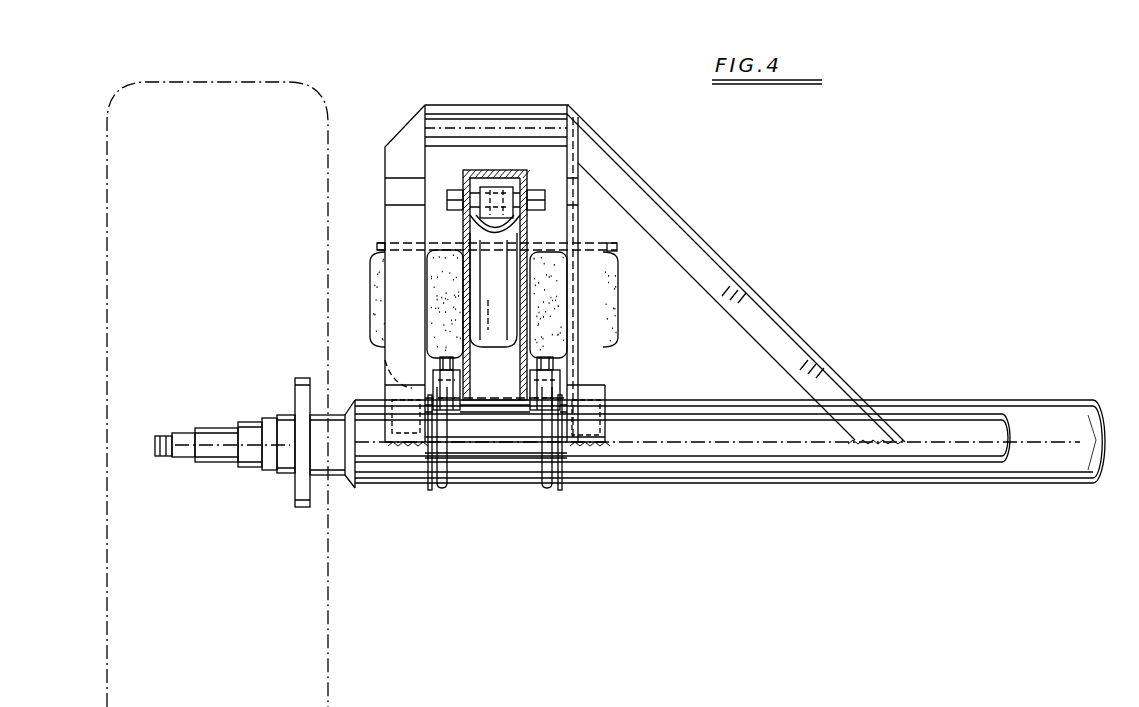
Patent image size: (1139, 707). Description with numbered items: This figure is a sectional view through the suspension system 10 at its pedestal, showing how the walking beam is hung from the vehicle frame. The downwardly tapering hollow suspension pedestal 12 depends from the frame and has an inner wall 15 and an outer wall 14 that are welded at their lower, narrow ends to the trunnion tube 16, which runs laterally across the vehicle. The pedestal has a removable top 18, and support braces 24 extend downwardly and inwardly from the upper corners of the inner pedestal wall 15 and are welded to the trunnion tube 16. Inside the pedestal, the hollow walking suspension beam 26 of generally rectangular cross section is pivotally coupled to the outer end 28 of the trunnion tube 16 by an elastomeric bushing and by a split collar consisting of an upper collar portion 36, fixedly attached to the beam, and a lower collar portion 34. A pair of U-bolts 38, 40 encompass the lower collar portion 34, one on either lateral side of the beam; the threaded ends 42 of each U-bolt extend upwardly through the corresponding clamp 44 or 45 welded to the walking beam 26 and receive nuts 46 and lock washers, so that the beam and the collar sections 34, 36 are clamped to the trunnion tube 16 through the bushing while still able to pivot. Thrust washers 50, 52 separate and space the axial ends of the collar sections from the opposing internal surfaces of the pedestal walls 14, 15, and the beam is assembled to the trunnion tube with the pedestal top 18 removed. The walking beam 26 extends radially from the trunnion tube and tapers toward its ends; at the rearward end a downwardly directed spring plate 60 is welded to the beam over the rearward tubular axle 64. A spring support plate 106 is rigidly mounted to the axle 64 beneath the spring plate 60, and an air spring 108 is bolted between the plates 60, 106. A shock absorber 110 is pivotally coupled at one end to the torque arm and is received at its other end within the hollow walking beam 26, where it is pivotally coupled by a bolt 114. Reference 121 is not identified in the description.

The suspension system 10 is at (377, 74).
The suspension pedestal 12 is at (602, 133).
The outer pedestal wall 14 is at (384, 387).
The inner pedestal wall 15 is at (595, 428).
The trunnion tube 16 is at (963, 458).
The removable pedestal top 18 is at (535, 104).
The support brace 24 is at (690, 227).
The walking suspension beam 26 is at (453, 228).
The outer end of trunnion tube 28 is at (395, 468).
The lower collar portion 34 is at (485, 480).
The upper collar portion 36 is at (522, 425).
The U-bolt 38 is at (445, 493).
The U-bolt 40 is at (550, 487).
The threaded ends 42 is at (553, 364).
The clamp 44 is at (455, 390).
The clamp 45 is at (575, 392).
The nuts 46 is at (440, 360).
The thrust washer 50 is at (427, 480).
The thrust washer 52 is at (558, 488).
The spring plate 60 is at (378, 246).
The rearward tubular axle 64 is at (1052, 408).
The spring support plate 106 is at (385, 360).
The air spring 108 is at (377, 308).
The shock absorber 110 is at (498, 290).
The bolt 114 is at (545, 200).
The tank 121 is at (107, 332).